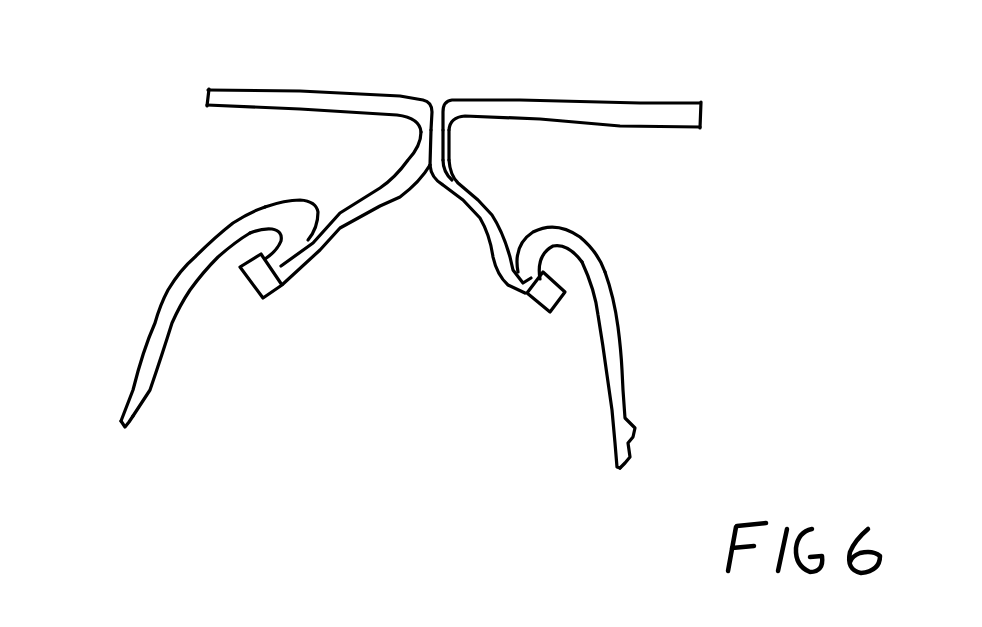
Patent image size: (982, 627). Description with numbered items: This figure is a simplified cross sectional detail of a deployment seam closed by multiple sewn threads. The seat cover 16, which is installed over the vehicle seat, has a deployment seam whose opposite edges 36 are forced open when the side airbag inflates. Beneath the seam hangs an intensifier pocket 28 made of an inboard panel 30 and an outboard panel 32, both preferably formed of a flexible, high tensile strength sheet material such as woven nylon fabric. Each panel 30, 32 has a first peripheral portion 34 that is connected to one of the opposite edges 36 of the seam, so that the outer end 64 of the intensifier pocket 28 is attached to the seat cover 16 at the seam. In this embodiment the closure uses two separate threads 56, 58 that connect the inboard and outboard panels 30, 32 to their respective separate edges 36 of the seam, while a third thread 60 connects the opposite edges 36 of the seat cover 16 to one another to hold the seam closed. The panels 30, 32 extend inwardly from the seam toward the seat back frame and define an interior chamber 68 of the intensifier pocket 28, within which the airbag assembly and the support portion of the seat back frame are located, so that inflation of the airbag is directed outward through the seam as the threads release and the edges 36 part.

The seat cover 16 is at (257, 84).
The intensifier pocket 28 is at (604, 426).
The inboard panel 30 is at (130, 392).
The outboard panel 32 is at (613, 361).
The first peripheral portion 34 is at (243, 270).
The opposite edges 36 is at (267, 293).
The thread 56 is at (282, 263).
The thread 58 is at (530, 291).
The third thread 60 is at (421, 140).
The outer end 64 is at (382, 359).
The interior chamber 68 is at (147, 390).